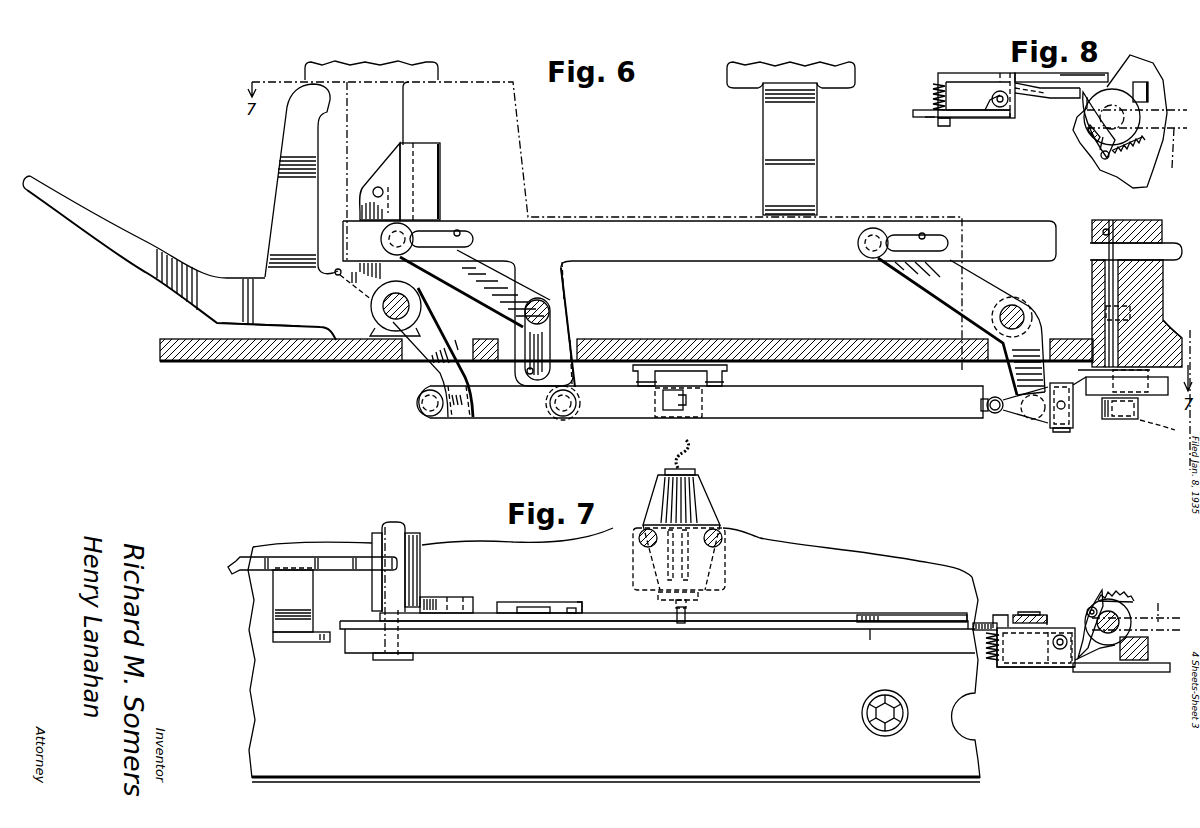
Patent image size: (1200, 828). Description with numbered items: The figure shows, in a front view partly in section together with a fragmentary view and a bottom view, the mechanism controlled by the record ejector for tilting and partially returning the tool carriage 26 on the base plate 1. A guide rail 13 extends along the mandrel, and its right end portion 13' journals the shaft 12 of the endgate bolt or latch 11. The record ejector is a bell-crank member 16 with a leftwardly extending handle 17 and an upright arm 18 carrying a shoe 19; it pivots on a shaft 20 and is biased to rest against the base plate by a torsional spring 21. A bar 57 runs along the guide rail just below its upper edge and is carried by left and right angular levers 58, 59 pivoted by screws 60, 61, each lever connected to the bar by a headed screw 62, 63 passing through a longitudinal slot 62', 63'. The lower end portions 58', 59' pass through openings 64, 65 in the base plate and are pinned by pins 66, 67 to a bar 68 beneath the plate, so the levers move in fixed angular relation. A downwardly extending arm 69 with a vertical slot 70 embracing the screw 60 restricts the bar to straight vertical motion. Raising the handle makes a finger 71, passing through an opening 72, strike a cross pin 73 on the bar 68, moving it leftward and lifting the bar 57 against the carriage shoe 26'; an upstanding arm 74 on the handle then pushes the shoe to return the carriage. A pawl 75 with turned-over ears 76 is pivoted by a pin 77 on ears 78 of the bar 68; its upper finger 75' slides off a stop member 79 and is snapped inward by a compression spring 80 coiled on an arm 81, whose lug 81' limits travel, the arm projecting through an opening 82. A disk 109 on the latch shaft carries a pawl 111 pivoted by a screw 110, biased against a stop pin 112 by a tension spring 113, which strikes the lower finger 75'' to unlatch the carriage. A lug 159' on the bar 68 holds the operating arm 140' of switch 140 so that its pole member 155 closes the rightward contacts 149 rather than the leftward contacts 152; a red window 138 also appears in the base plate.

In FIG. 6, the base plate 1 is at (175, 338).
In FIG. 8, the base plate 1 is at (1158, 84).
In FIG. 7, the base plate 1 is at (614, 655).
In FIG. 6, the endgate bolt or latch 11 is at (1165, 248).
In FIG. 8, the endgate bolt or latch 11 is at (1172, 159).
In FIG. 7, the endgate bolt or latch 11 is at (1163, 609).
In FIG. 6, the shaft 12 is at (1106, 290).
In FIG. 7, the guide rail 13 is at (660, 656).
In FIG. 6, the right end portion of guide rail 13' is at (1144, 293).
In FIG. 6, the record ejector member 16 is at (226, 337).
In FIG. 6, the handle 17 is at (115, 236).
In FIG. 7, the handle 17 is at (242, 561).
In FIG. 6, the upright arm 18 is at (362, 205).
In FIG. 6, the shoe 19 is at (421, 156).
In FIG. 6, the shaft 20 is at (383, 305).
In FIG. 7, the shaft 20 is at (390, 525).
In FIG. 6, the torsional spring 21 is at (337, 289).
In FIG. 6, the carriage 26 is at (597, 58).
In FIG. 6, the carriage shoe 26' is at (810, 149).
In FIG. 6, the bar 57 is at (659, 251).
In FIG. 7, the bar 57 is at (607, 653).
In FIG. 6, the left angular lever 58 is at (475, 288).
In FIG. 7, the left angular lever 58 is at (673, 596).
In FIG. 6, the lower end portion of left lever 58' is at (591, 328).
In FIG. 7, the lower end portion of left lever 58' is at (595, 604).
In FIG. 6, the right angular lever 59 is at (961, 326).
In FIG. 7, the right angular lever 59 is at (912, 607).
In FIG. 6, the lower end portion of right lever 59' is at (1005, 372).
In FIG. 7, the lower end portion of right lever 59' is at (1059, 609).
In FIG. 6, the screw 60 is at (548, 318).
In FIG. 7, the screw 60 is at (535, 605).
In FIG. 6, the screw 61 is at (1019, 310).
In FIG. 6, the headed screw 62 is at (433, 215).
In FIG. 7, the headed screw 62 is at (417, 654).
In FIG. 6, the slot 62' is at (453, 221).
In FIG. 6, the headed screw 63 is at (876, 223).
In FIG. 7, the headed screw 63 is at (874, 654).
In FIG. 6, the slot 63' is at (924, 220).
In FIG. 6, the opening 64 is at (576, 340).
In FIG. 6, the opening 65 is at (1047, 344).
In FIG. 6, the pin 66 is at (559, 415).
In FIG. 7, the pin 66 is at (573, 607).
In FIG. 6, the pin 67 is at (1028, 418).
In FIG. 6, the bar 68 is at (701, 402).
In FIG. 8, the bar 68 is at (913, 112).
In FIG. 7, the bar 68 is at (983, 621).
In FIG. 6, the downwardly extending arm 69 is at (562, 279).
In FIG. 6, the vertical slot 70 is at (528, 375).
In FIG. 6, the finger 71 is at (433, 355).
In FIG. 7, the finger 71 is at (463, 610).
In FIG. 6, the opening 72 is at (412, 363).
In FIG. 7, the opening 72 is at (477, 596).
In FIG. 6, the cross pin 73 is at (425, 417).
In FIG. 7, the cross pin 73 is at (441, 606).
In FIG. 6, the upstanding arm 74 is at (293, 136).
In FIG. 7, the upstanding arm 74 is at (301, 642).
In FIG. 6, the pawl 75 is at (1082, 424).
In FIG. 8, the pawl 75 is at (976, 80).
In FIG. 7, the pawl 75 is at (1036, 668).
In FIG. 6, the upper finger 75' is at (1129, 401).
In FIG. 8, the upper finger 75' is at (1061, 68).
In FIG. 7, the upper finger 75' is at (1123, 685).
In FIG. 6, the lower finger 75'' is at (1145, 429).
In FIG. 8, the lower finger 75'' is at (1047, 108).
In FIG. 7, the lower finger 75'' is at (1106, 675).
In FIG. 6, the turned-over ears 76 is at (1066, 432).
In FIG. 8, the turned-over ears 76 is at (1009, 98).
In FIG. 7, the turned-over ears 76 is at (1050, 655).
In FIG. 6, the pin 77 is at (1060, 412).
In FIG. 8, the pin 77 is at (1006, 103).
In FIG. 8, the ears 78 is at (990, 107).
In FIG. 7, the ears 78 is at (1046, 615).
In FIG. 6, the stop member 79 is at (1168, 325).
In FIG. 8, the stop member 79 is at (1150, 92).
In FIG. 7, the stop member 79 is at (1150, 652).
In FIG. 6, the compression spring 80 is at (996, 414).
In FIG. 8, the compression spring 80 is at (934, 94).
In FIG. 7, the compression spring 80 is at (1016, 646).
In FIG. 7, the arm 81 is at (1027, 661).
In FIG. 8, the lug 81' is at (974, 123).
In FIG. 7, the lug 81' is at (1012, 603).
In FIG. 6, the opening 82 is at (984, 412).
In FIG. 8, the opening 82 is at (931, 121).
In FIG. 6, the disk 109 is at (1170, 432).
In FIG. 8, the disk 109 is at (1116, 105).
In FIG. 7, the disk 109 is at (1125, 618).
In FIG. 8, the screw 110 is at (1101, 158).
In FIG. 7, the screw 110 is at (1090, 607).
In FIG. 8, the pawl 111 is at (1088, 112).
In FIG. 7, the pawl 111 is at (1095, 600).
In FIG. 8, the stop pin 112 is at (1103, 160).
In FIG. 8, the tension spring 113 is at (1126, 152).
In FIG. 7, the tension spring 113 is at (1120, 596).
In FIG. 7, the red colored window 138 is at (892, 691).
In FIG. 6, the switch 140 is at (704, 376).
In FIG. 7, the switch 140 is at (701, 482).
In FIG. 6, the operating arm 140' is at (705, 402).
In FIG. 7, the operating arm 140' is at (719, 608).
In FIG. 7, the rightward pair of contacts 149 is at (733, 516).
In FIG. 7, the leftward pair of contacts 152 is at (650, 524).
In FIG. 7, the pole member 155 is at (716, 512).
In FIG. 6, the lug 159' is at (671, 420).
In FIG. 7, the lug 159' is at (649, 613).